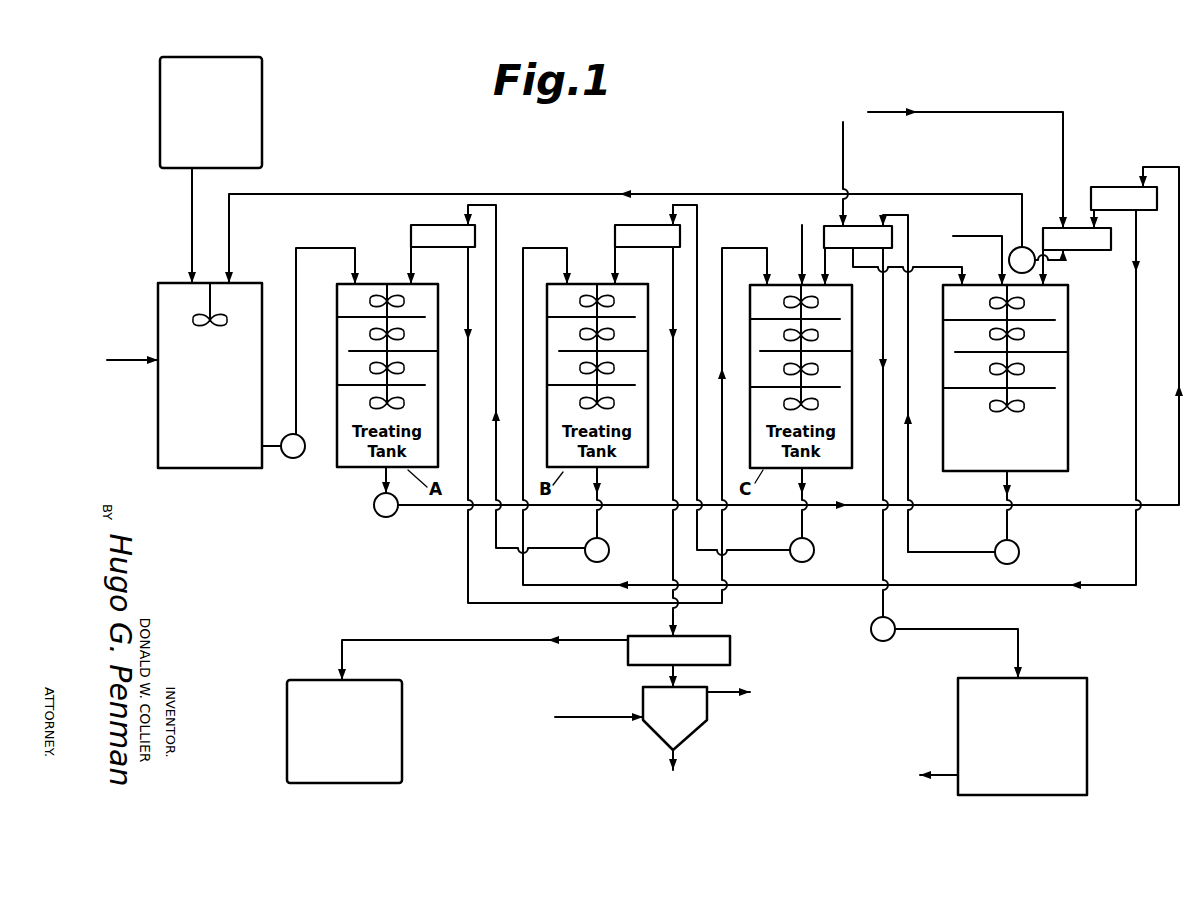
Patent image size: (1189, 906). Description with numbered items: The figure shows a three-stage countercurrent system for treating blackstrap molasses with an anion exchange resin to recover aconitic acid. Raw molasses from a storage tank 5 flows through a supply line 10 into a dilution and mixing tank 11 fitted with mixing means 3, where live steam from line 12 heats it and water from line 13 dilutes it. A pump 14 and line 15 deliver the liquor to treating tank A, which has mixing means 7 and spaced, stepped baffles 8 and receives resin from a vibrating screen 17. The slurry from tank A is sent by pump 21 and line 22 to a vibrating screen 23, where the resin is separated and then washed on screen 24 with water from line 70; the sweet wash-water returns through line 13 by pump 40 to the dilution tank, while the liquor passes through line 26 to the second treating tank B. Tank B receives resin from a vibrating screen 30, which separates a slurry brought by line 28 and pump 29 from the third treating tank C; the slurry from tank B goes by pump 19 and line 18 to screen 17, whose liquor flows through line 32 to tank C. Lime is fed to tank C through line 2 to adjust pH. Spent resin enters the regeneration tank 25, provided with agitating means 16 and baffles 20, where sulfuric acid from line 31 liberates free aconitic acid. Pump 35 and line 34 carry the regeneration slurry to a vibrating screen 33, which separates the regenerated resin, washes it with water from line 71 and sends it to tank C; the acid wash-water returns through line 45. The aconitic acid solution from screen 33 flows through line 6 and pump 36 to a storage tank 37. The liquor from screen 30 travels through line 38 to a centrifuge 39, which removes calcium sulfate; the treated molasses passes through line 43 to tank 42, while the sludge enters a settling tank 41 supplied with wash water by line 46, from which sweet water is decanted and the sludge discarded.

The lime feed line 2 is at (800, 243).
The mixing means 3 is at (215, 325).
The storage tank 5 is at (158, 111).
The line 6 is at (882, 418).
The mixing means 7 is at (375, 333).
The baffles 8 is at (412, 385).
The supply line 10 is at (192, 202).
The dilution and mixing tank 11 is at (157, 427).
The steam line 12 is at (133, 357).
The water line 13 is at (401, 193).
The pump 14 is at (291, 462).
The line 15 is at (297, 382).
The agitating means 16 is at (988, 335).
The vibrating screen 17 is at (445, 223).
The line 18 is at (497, 258).
The pump 19 is at (610, 550).
The baffles 20 is at (1037, 353).
The pump 21 is at (373, 506).
The line 22 is at (447, 507).
The vibrating screen 23 is at (1120, 185).
The screen 24 is at (1078, 252).
The regeneration tank 25 is at (1072, 453).
The line 26 is at (538, 586).
The line 28 is at (700, 270).
The pump 29 is at (815, 552).
The vibrating screen 30 is at (630, 226).
The sulfuric acid line 31 is at (1000, 255).
The line 32 is at (467, 281).
The vibrating screen 33 is at (872, 227).
The line 34 is at (908, 347).
The pump 35 is at (1020, 551).
The pump 36 is at (896, 624).
The storage tank 37 is at (1088, 708).
The line 38 is at (672, 445).
The centrifuge 39 is at (731, 645).
The pump 40 is at (1026, 247).
The settling tank 41 is at (640, 702).
The tank 42 is at (402, 753).
The line 43 is at (467, 641).
The line 45 is at (936, 266).
The wash water line 46 is at (603, 718).
The water line 70 is at (1063, 150).
The water line 71 is at (842, 168).